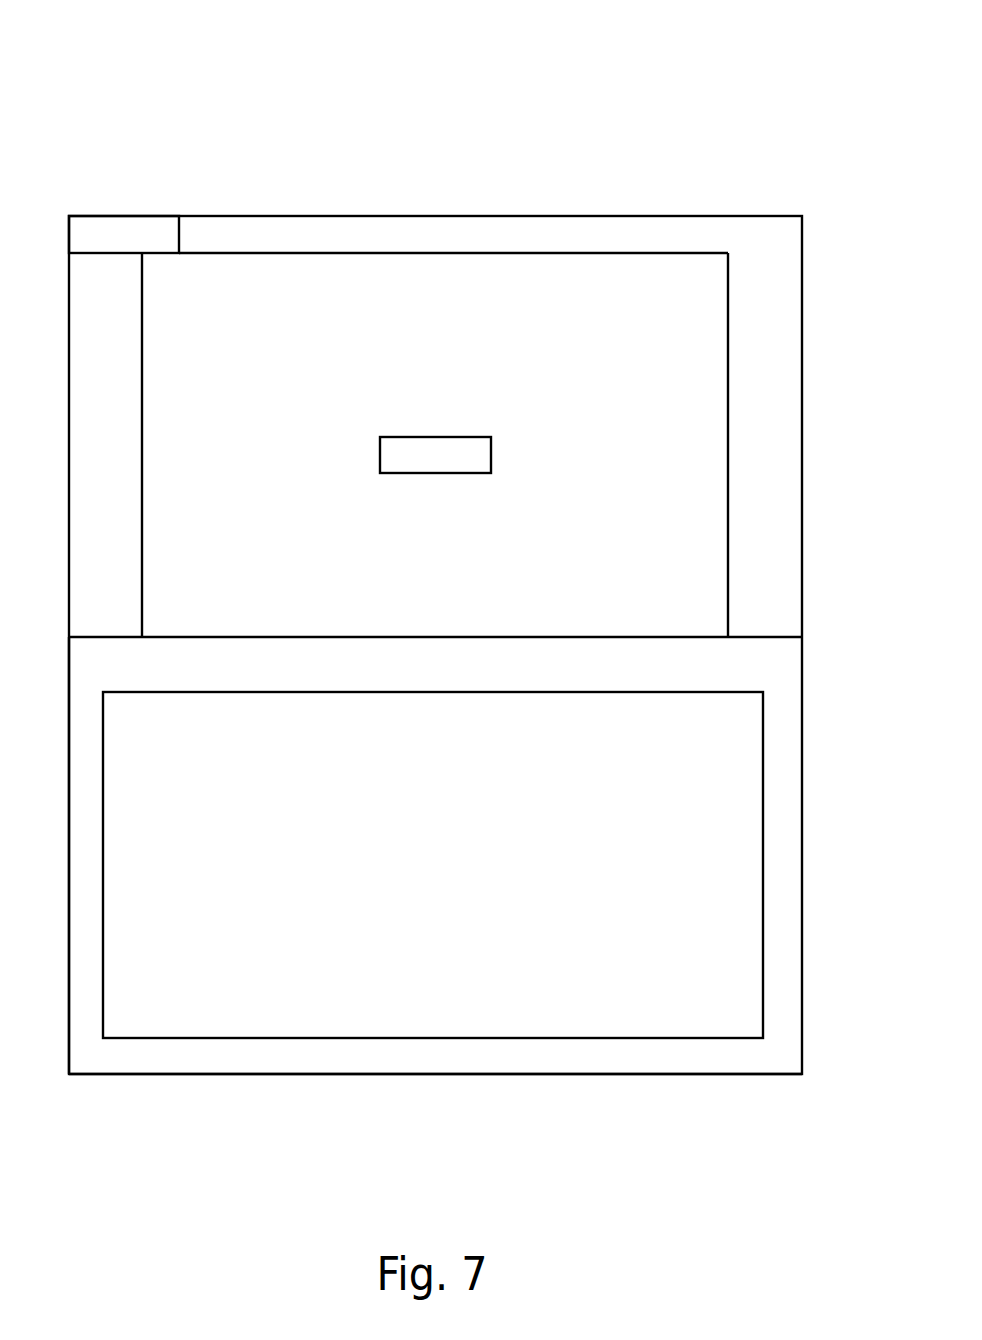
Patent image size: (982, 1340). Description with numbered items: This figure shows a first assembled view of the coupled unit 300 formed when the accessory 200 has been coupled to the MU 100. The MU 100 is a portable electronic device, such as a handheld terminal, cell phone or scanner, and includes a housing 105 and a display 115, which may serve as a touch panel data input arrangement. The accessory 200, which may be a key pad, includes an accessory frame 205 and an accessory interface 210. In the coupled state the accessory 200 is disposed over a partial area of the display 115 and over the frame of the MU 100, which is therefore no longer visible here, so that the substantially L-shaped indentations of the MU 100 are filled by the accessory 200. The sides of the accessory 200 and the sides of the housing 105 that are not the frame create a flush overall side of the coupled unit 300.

The MU 100 is at (620, 216).
The housing 105 is at (107, 216).
The display 115 is at (436, 290).
The accessory 200 is at (617, 1074).
The accessory frame 205 is at (103, 1074).
The accessory interface 210 is at (433, 983).
The system 300 is at (838, 72).